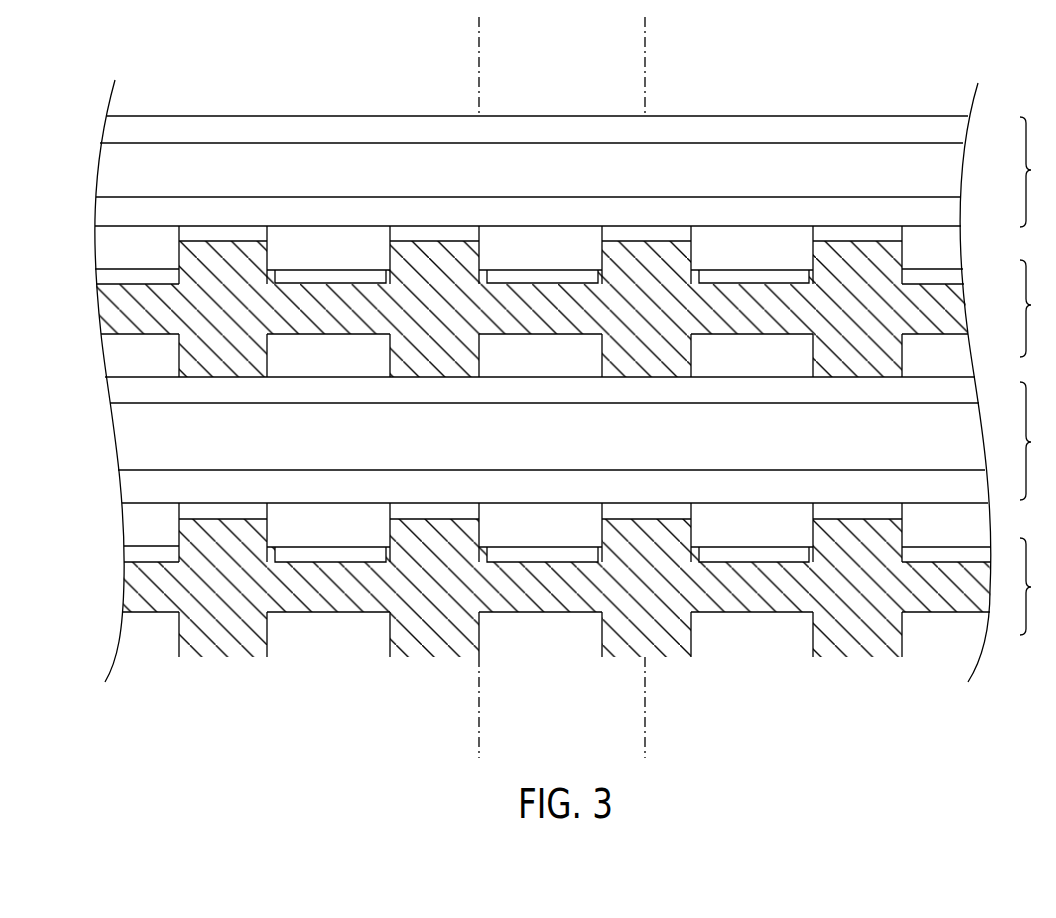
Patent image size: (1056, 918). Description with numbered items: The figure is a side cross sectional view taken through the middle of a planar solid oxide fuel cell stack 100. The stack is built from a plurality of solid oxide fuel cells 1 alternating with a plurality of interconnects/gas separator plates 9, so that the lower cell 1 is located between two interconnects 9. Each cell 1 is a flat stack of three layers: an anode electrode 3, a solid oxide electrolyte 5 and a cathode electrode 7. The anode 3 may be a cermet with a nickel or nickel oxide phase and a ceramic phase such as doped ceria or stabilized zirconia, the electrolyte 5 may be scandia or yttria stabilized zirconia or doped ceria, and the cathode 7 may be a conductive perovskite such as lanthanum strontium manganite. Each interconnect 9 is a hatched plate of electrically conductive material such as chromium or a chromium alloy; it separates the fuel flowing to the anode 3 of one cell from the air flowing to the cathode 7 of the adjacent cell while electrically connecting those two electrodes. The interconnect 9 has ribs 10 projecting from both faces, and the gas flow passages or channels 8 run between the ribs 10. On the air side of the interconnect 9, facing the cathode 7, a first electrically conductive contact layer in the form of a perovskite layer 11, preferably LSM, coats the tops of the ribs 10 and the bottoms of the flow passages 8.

The planar solid oxide fuel cell stack 100 is at (830, 72).
The solid oxide fuel cell 1 is at (1033, 308).
The anode electrode 3 is at (110, 130).
The solid oxide electrolyte 5 is at (109, 172).
The cathode electrode 7 is at (110, 215).
The gas flow passages 8 is at (336, 261).
The interconnect/gas flow separator plate 9 is at (571, 441).
The ribs 10 is at (179, 257).
The perovskite layer 11 is at (905, 249).